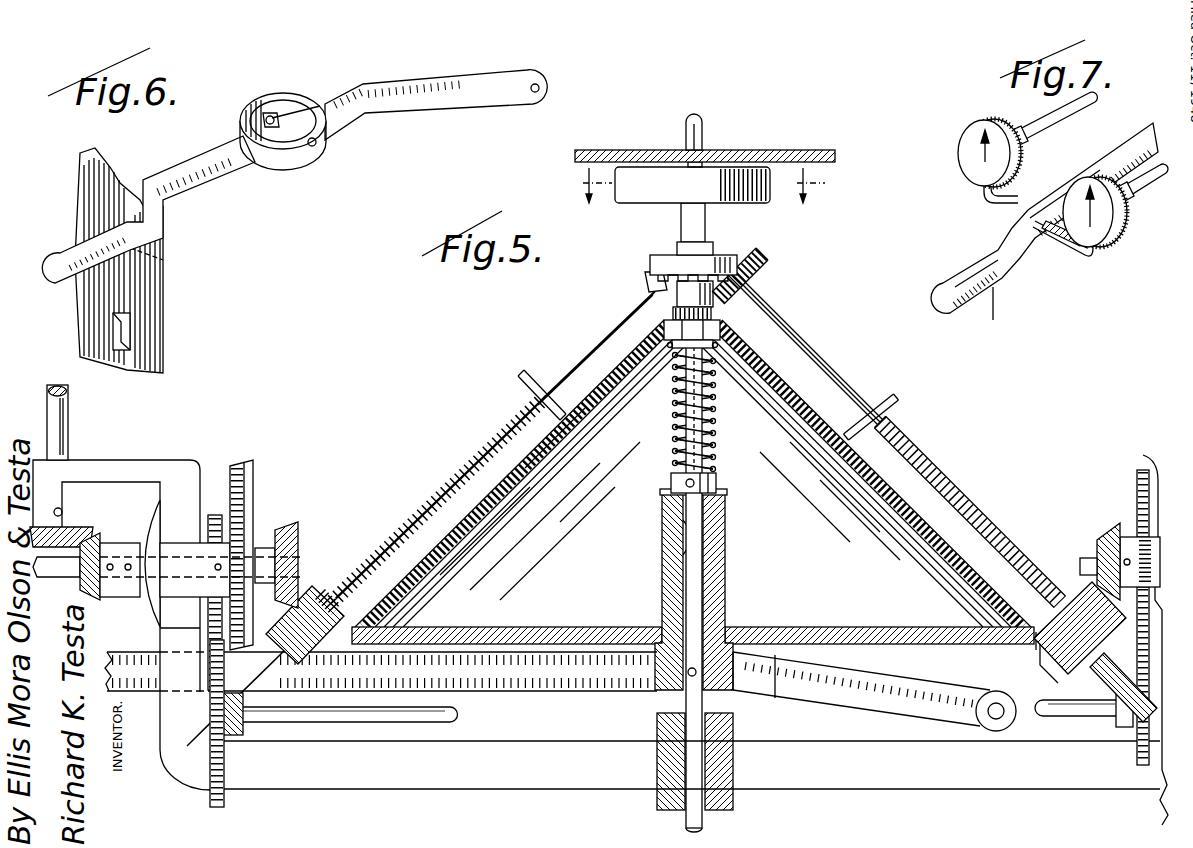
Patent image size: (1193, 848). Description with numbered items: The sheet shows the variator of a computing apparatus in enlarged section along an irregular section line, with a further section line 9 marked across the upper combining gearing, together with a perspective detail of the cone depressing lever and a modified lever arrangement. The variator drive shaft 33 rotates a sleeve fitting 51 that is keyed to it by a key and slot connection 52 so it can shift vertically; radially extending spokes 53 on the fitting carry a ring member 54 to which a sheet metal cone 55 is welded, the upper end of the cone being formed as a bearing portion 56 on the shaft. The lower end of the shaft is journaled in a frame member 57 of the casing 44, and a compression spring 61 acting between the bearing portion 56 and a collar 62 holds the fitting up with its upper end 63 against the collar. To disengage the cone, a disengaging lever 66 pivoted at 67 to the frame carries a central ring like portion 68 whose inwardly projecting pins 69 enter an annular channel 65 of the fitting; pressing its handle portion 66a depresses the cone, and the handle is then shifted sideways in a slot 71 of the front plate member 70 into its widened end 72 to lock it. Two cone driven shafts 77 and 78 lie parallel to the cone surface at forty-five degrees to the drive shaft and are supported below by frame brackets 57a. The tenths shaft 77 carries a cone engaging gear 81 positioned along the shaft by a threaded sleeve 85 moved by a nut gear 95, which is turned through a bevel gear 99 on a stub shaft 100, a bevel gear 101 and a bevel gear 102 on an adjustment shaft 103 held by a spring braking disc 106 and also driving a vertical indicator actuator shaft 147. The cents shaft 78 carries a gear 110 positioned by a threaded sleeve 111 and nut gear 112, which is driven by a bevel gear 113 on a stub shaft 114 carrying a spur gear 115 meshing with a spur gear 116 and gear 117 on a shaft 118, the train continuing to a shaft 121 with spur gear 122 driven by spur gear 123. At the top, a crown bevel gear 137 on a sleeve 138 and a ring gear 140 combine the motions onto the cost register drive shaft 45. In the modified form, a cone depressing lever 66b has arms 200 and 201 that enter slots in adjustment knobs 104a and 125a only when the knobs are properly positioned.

In FIG. 5, the section line 9 is at (701, 185).
In FIG. 5, the variator drive shaft 33 is at (707, 818).
In FIG. 5, the casing 44 is at (607, 153).
In FIG. 5, the cost register drive shaft 45 is at (705, 137).
In FIG. 5, the sleeve fitting 51 is at (717, 592).
In FIG. 5, the key and slot connection 52 is at (677, 537).
In FIG. 5, the radially extending spokes 53 is at (553, 630).
In FIG. 5, the ring member 54 is at (410, 628).
In FIG. 5, the sheet metal cone 55 is at (510, 482).
In FIG. 5, the formed bearing portion 56 is at (717, 317).
In FIG. 5, the frame member 57 is at (483, 780).
In FIG. 5, the frame brackets 57a is at (1060, 677).
In FIG. 5, the compression spring 61 is at (708, 410).
In FIG. 5, the collar 62 is at (718, 484).
In FIG. 5, the upper end of the fitting 63 is at (667, 487).
In FIG. 5, the annular channel 65 is at (793, 670).
In FIG. 6, the shifting or disengaging lever 66 is at (417, 103).
In FIG. 5, the shifting or disengaging lever 66 is at (893, 700).
In FIG. 6, the handle portion 66a is at (63, 257).
In FIG. 7, the cone depressing lever 66b is at (993, 320).
In FIG. 5, the pivot 67 is at (996, 711).
In FIG. 6, the central ring like portion 68 is at (297, 155).
In FIG. 6, the inwardly projecting pins 69 is at (275, 108).
In FIG. 5, the inwardly projecting pins 69 is at (690, 674).
In FIG. 6, the front plate member 70 is at (150, 287).
In FIG. 6, the slot 71 is at (140, 233).
In FIG. 6, the widened lower end 72 is at (123, 333).
In FIG. 5, the cone driven shaft 77 is at (607, 330).
In FIG. 5, the cone driven shaft 78 is at (793, 333).
In FIG. 5, the cone engaging gear 81 is at (523, 367).
In FIG. 5, the threaded sleeve 85 is at (457, 477).
In FIG. 5, the nut gear 95 is at (380, 655).
In FIG. 5, the bevel gear 99 is at (293, 523).
In FIG. 5, the stub shaft 100 is at (297, 563).
In FIG. 5, the bevel gear 101 is at (233, 540).
In FIG. 5, the bevel gear 102 is at (255, 468).
In FIG. 5, the adjustment shaft 103 is at (57, 563).
In FIG. 7, the adjustment knob 104a is at (1103, 173).
In FIG. 5, the spring braking disc 106 is at (150, 465).
In FIG. 5, the gear 110 is at (896, 397).
In FIG. 5, the threaded sleeve 111 is at (973, 513).
In FIG. 5, the nut gear 112 is at (1070, 583).
In FIG. 5, the bevel gear 113 is at (1103, 528).
In FIG. 5, the stub shaft 114 is at (1097, 553).
In FIG. 5, the spur gear 115 is at (1157, 475).
In FIG. 5, the spur gear 116 is at (1136, 482).
In FIG. 5, the gear 117 is at (1150, 743).
In FIG. 5, the shaft 118 is at (1036, 703).
In FIG. 5, the shaft 121 is at (413, 717).
In FIG. 5, the spur gear 122 is at (227, 772).
In FIG. 5, the spur gear 123 is at (220, 460).
In FIG. 7, the adjustment knob 125a is at (973, 133).
In FIG. 5, the crown bevel gear 137 is at (653, 265).
In FIG. 5, the sleeve 138 is at (743, 270).
In FIG. 5, the crown or ring gear 140 is at (633, 190).
In FIG. 5, the vertical indicator actuator shaft 147 is at (70, 413).
In FIG. 7, the arm 200 is at (1117, 253).
In FIG. 7, the arm 201 is at (1000, 200).